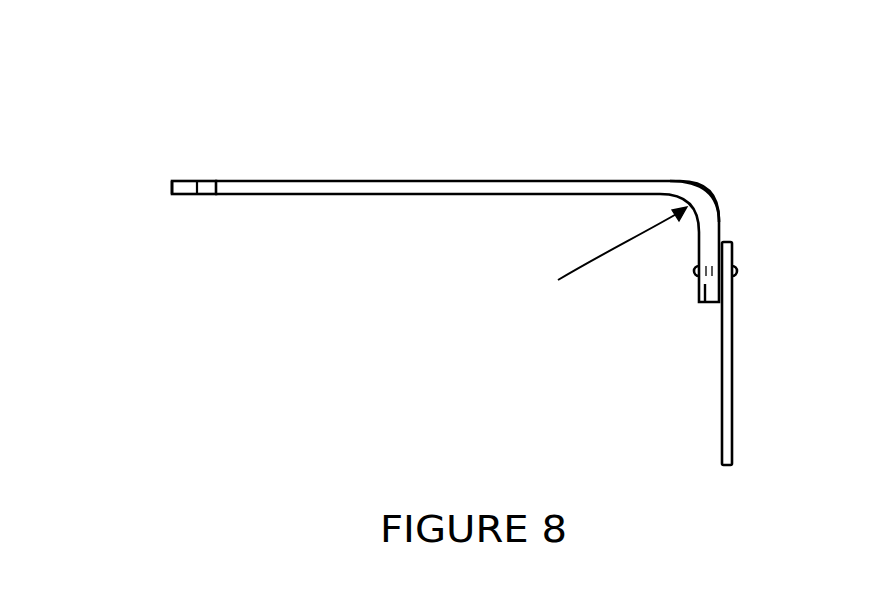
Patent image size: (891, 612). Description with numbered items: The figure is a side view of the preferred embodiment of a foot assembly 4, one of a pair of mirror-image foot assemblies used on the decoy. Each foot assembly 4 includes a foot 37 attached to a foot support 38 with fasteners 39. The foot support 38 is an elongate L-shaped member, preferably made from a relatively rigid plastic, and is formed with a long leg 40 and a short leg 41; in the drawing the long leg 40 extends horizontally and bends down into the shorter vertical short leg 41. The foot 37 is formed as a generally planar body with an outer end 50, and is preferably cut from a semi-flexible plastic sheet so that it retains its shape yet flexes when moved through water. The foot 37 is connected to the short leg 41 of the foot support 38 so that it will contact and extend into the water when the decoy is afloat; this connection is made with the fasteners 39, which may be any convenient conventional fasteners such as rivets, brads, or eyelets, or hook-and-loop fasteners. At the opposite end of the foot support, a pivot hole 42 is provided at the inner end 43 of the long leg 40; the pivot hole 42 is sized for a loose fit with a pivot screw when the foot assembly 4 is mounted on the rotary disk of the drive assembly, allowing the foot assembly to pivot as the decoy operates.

The foot assembly 4 is at (613, 252).
The foot 37 is at (722, 394).
The foot support 38 is at (707, 181).
The fasteners 39 is at (736, 272).
The long leg 40 is at (338, 186).
The short leg 41 is at (713, 240).
The pivot hole 42 is at (209, 181).
The inner end 43 is at (172, 189).
The outer end 50 is at (705, 302).